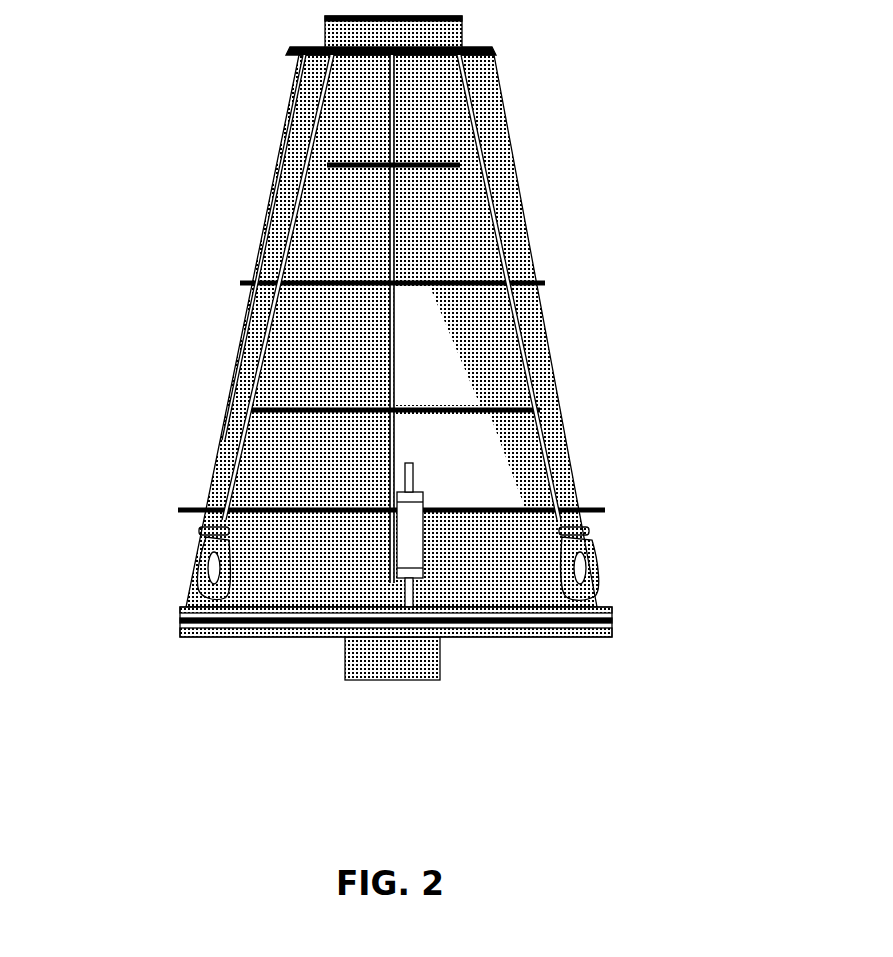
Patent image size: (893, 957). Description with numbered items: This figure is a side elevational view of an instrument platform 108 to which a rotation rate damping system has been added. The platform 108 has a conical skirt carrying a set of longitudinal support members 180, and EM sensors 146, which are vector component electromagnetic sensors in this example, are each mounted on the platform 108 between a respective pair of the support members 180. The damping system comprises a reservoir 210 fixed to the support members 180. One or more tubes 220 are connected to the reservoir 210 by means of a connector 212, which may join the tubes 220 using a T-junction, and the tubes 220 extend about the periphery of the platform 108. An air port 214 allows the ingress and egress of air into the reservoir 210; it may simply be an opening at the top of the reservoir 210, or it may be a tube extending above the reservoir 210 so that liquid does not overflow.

The platform body 108 is at (158, 114).
The longitudinal support members 180 is at (515, 170).
The EM sensors 146 is at (200, 566).
The reservoir 210 is at (407, 530).
The connector 212 is at (412, 593).
The air port 214 is at (408, 482).
The tubes 220 is at (590, 630).